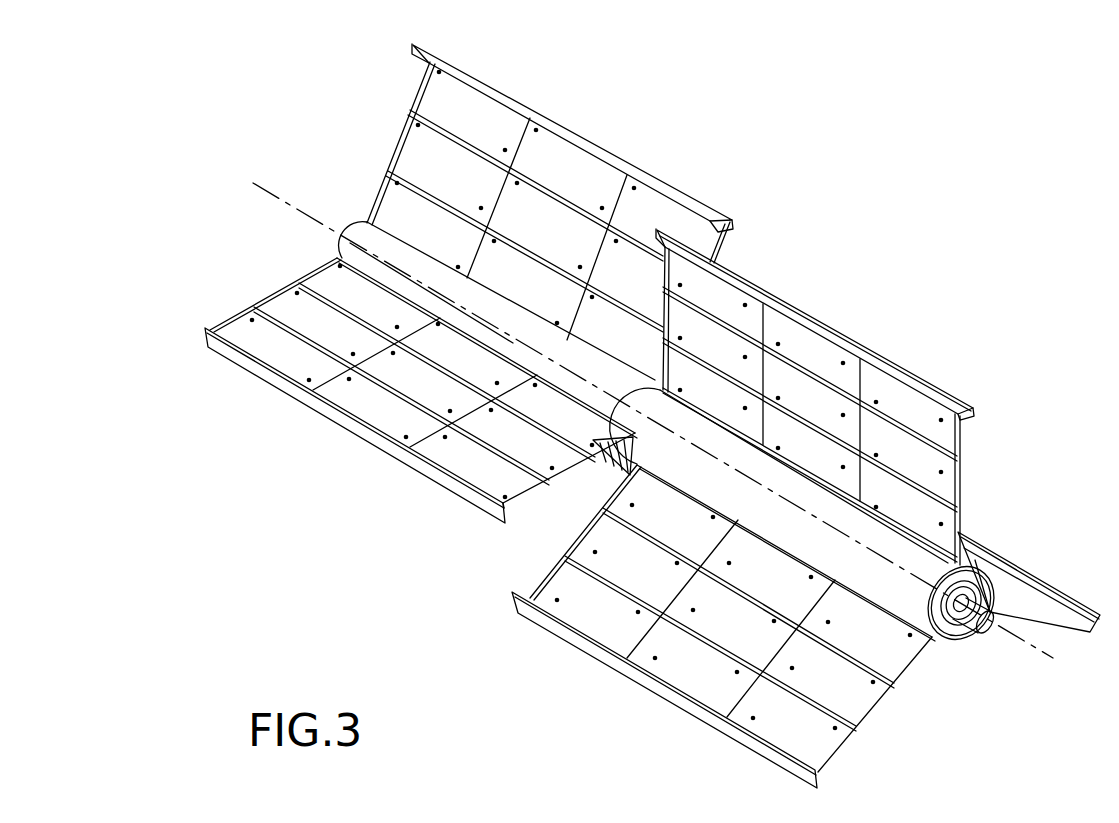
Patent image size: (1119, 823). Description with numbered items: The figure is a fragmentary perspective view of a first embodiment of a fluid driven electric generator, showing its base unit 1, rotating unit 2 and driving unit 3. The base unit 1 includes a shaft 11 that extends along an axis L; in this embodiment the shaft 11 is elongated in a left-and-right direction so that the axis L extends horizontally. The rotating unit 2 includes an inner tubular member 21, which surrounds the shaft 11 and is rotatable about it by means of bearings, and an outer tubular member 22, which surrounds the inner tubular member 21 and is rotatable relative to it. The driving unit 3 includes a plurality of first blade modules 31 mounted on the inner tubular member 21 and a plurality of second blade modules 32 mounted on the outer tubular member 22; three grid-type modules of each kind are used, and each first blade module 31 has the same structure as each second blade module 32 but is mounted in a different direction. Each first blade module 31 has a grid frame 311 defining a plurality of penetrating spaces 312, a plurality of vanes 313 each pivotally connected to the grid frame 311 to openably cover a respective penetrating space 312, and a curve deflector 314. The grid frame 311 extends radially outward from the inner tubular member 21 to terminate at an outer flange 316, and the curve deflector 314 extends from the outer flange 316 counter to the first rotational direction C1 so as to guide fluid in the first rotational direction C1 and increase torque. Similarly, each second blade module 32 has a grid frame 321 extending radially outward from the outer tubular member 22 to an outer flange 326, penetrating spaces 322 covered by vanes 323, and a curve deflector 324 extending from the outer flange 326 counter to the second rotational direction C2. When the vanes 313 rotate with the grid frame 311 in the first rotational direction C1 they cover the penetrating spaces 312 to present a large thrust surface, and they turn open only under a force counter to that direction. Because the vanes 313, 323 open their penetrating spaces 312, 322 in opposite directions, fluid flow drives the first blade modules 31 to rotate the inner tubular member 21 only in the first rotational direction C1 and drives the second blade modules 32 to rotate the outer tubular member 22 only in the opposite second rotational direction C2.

The base unit 1 is at (430, 372).
The shaft 11 is at (337, 238).
The rotating unit 2 is at (950, 640).
The inner tubular member 21 is at (477, 330).
The outer tubular member 22 is at (893, 593).
The driving unit 3 is at (733, 189).
The first blade module 31 is at (534, 273).
The grid frame 311 is at (561, 193).
The penetrating space 312 is at (424, 74).
The vane 313 is at (495, 113).
The curve deflector 314 is at (458, 63).
The outer flange 316 is at (428, 37).
The second blade module 32 is at (854, 491).
The grid frame 321 is at (898, 423).
The penetrating space 322 is at (950, 440).
The vane 323 is at (778, 320).
The curve deflector 324 is at (877, 358).
The outer flange 326 is at (960, 413).
The first rotational direction C1 is at (262, 203).
The second rotational direction C2 is at (1022, 622).
The axis L is at (669, 432).